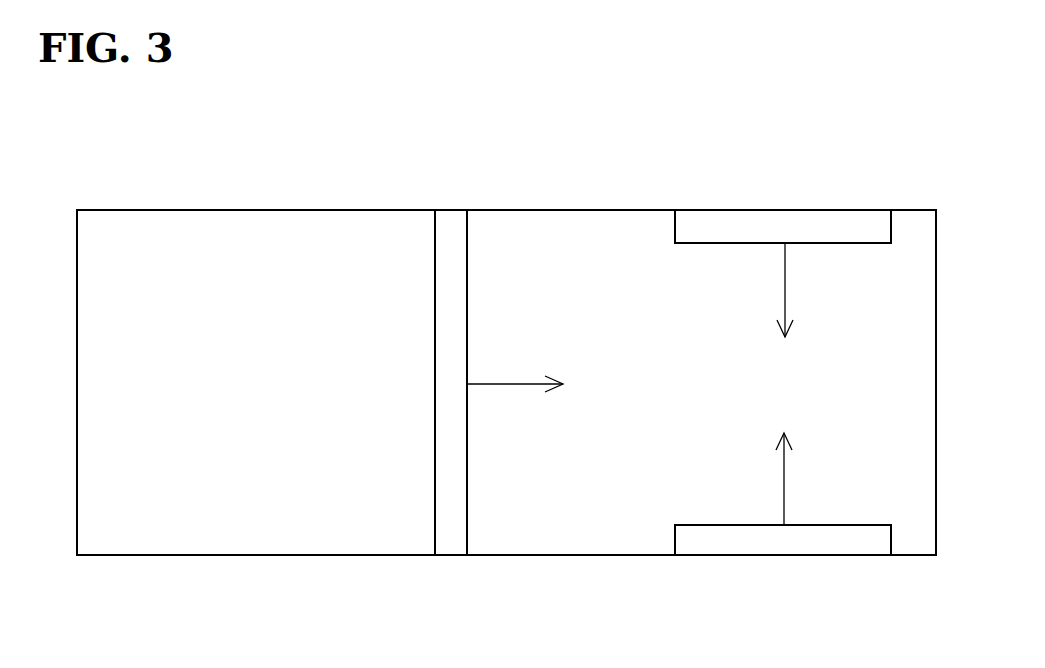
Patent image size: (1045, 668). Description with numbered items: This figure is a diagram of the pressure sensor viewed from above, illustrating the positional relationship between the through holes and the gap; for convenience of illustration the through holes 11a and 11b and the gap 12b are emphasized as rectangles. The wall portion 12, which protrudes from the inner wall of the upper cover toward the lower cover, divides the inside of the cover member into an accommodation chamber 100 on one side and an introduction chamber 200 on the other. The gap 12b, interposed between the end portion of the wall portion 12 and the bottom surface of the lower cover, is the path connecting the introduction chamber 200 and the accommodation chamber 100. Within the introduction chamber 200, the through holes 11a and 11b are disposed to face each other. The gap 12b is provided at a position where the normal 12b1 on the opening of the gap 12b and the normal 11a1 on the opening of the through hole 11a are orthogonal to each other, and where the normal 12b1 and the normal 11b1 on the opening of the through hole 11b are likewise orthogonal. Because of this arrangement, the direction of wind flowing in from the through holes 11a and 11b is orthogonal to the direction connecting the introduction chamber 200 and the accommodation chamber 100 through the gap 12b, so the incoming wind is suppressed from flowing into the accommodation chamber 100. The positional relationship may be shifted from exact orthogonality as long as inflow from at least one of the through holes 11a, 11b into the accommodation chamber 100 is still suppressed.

The accommodation chamber 100 is at (259, 524).
The introduction chamber 200 is at (601, 524).
The wall portion 12 is at (435, 430).
The gap 12b is at (460, 210).
The normal on the opening of the gap 12b1 is at (488, 381).
The through hole 11b is at (825, 210).
The normal on the opening of the through hole 11b1 is at (787, 275).
The through hole 11a is at (866, 555).
The normal on the opening of the through hole 11a1 is at (787, 485).